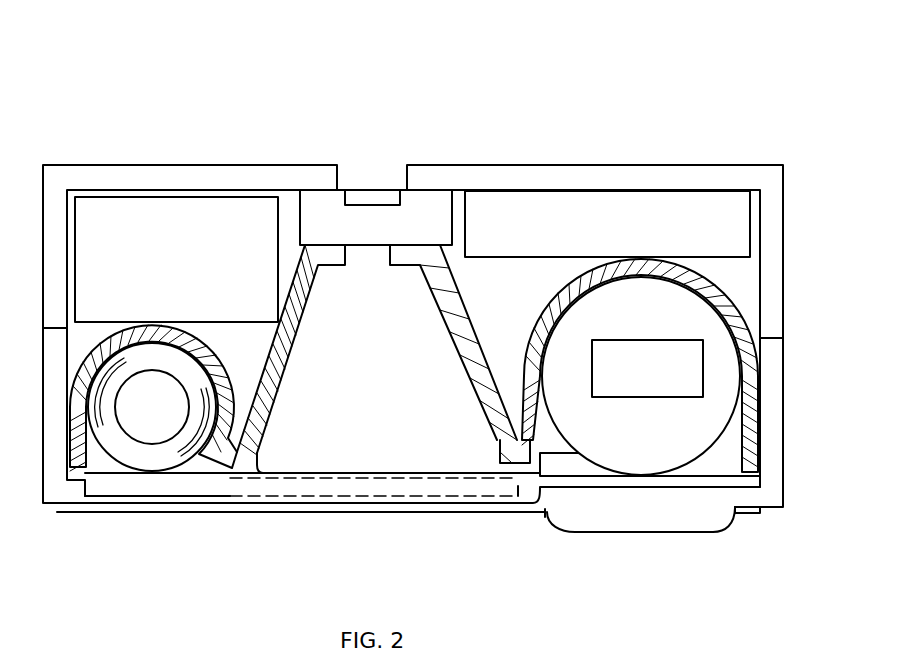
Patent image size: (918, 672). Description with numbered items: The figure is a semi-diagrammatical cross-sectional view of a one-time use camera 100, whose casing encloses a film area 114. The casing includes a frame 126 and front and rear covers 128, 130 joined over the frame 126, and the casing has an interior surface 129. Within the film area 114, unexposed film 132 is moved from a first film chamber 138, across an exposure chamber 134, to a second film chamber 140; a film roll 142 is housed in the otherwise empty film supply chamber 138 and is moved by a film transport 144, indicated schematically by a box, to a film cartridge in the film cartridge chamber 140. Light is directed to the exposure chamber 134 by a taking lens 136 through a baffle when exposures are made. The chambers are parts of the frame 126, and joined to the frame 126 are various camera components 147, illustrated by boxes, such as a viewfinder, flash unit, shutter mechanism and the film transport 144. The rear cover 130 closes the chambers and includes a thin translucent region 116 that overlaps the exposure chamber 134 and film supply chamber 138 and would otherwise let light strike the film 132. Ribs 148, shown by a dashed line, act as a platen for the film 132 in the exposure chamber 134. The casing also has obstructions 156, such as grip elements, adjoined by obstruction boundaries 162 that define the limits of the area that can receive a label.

The camera 100 is at (426, 91).
The film area 114 is at (325, 324).
The light-transmissive region 116 is at (183, 500).
The frame 126 is at (560, 290).
The front cover 128 is at (683, 167).
The interior surface 129 is at (119, 190).
The rear cover 130 is at (785, 366).
The unexposed film 132 is at (288, 470).
The exposure chamber 134 is at (262, 470).
The taking lens 136 is at (373, 189).
The first film chamber 138 is at (86, 472).
The second film chamber 140 is at (737, 455).
The film roll 142 is at (177, 381).
The film transport 144 is at (703, 358).
The camera components 147 is at (192, 191).
The ribs 148 is at (481, 474).
The obstructions 156 is at (638, 533).
The obstruction boundaries 162 is at (547, 514).